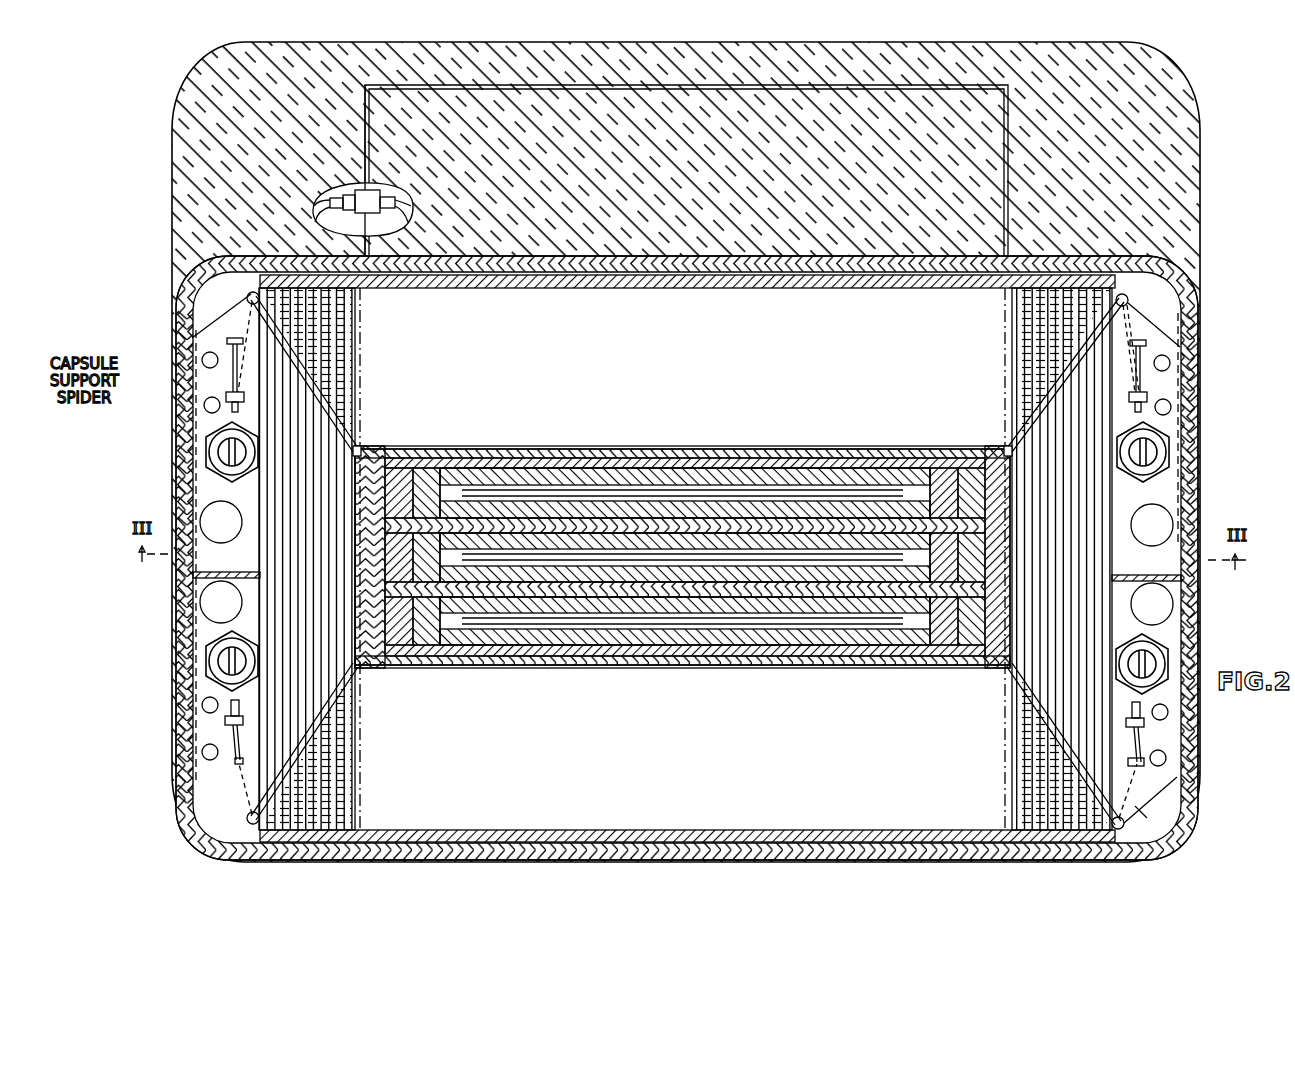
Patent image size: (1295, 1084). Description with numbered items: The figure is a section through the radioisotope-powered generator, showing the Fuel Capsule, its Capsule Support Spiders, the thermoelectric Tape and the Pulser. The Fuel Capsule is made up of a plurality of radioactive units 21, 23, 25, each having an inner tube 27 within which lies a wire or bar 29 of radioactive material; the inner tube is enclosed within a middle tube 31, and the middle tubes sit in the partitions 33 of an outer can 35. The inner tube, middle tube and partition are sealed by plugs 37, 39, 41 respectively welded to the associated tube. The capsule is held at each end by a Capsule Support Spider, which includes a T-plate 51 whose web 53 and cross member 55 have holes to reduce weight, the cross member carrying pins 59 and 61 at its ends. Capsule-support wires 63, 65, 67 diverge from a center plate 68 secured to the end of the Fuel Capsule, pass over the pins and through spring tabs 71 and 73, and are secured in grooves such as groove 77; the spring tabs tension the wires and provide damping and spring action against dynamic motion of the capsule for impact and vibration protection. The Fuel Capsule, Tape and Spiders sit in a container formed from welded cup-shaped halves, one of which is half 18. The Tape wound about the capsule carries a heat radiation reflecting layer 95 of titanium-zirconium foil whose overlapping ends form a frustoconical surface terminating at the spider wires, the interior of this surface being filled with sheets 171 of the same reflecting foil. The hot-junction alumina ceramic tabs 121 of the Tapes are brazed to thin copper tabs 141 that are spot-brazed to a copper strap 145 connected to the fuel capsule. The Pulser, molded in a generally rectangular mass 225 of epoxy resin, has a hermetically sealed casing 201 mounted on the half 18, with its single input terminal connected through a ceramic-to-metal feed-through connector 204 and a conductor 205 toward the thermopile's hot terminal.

The rectangular mass of transport epoxy resin 225 is at (1162, 82).
The hermetically sealed casing 201 is at (1010, 97).
The conductor 205 is at (339, 213).
The ceramic-to-metal feed-through connector 204 is at (363, 170).
The cup-shaped half 18 is at (708, 858).
The T-plate 51 is at (1183, 560).
The heat radiation reflecting layer 95 is at (960, 290).
The sheets of titanium-zirconium thermal-radiation reflecting foil 171 is at (280, 550).
The pin 59 is at (249, 297).
The pin 61 is at (249, 822).
The capsule-support wire 63 is at (246, 325).
The cross member 55 is at (1178, 336).
The capsule-support wire 65 is at (1135, 358).
The spring tab 73 is at (127, 384).
The spring tab 71 is at (230, 719).
The groove 77 is at (1144, 766).
The capsule-support wire 67 is at (1141, 800).
The web 53 is at (1153, 578).
The copper tab 141 is at (705, 448).
The alumina ceramic tab 121 is at (665, 452).
The copper strap 145 is at (630, 460).
The outer can 35 is at (375, 660).
The plug 41 is at (995, 660).
The partition 33 is at (398, 470).
The plug 39 is at (962, 660).
The plug 37 is at (935, 658).
The inner tube 27 is at (820, 645).
The middle tube 31 is at (570, 470).
The radioactive unit 25 is at (685, 493).
The radioactive unit 23 is at (685, 557).
The radioactive unit 21 is at (686, 621).
The wire or bar of radioactive material 29 is at (671, 557).
The center plate 68 is at (362, 450).